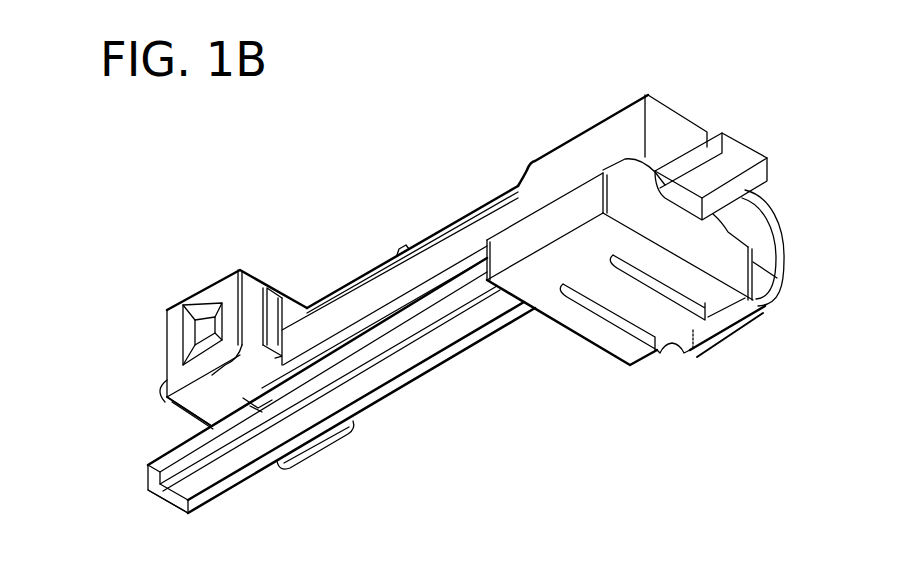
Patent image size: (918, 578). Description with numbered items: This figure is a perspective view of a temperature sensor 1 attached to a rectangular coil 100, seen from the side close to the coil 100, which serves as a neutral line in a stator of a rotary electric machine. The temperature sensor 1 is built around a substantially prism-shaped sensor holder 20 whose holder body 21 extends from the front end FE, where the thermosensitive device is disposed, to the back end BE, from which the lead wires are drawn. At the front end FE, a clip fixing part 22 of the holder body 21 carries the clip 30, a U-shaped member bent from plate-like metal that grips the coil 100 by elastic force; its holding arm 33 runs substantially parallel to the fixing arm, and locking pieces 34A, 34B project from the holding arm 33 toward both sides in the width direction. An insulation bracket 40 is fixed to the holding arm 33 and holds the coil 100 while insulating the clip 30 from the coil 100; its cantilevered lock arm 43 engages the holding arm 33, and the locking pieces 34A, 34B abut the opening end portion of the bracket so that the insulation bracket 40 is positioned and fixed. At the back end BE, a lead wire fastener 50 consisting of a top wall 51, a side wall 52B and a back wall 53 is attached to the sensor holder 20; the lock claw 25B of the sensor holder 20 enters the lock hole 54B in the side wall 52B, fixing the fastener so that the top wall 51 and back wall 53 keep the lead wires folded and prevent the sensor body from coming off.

The temperature sensor 1 is at (381, 173).
The sensor holder 20 is at (484, 232).
The holder body 21 is at (420, 240).
The clip fixing part 22 is at (582, 138).
The clip 30 is at (719, 279).
The holding arm 33 is at (727, 320).
The locking piece 34A is at (778, 295).
The locking piece 34B is at (663, 355).
The insulation bracket 40 is at (585, 340).
The lock arm 43 is at (693, 350).
The lead wire fastener 50 is at (188, 377).
The top wall 51 is at (230, 268).
The side wall 52B is at (228, 400).
The back wall 53 is at (160, 412).
The lock hole 54B is at (165, 398).
The lock claw 25B is at (200, 337).
The rectangular coil 100 is at (413, 388).
The front end FE is at (742, 105).
The back end BE is at (116, 369).